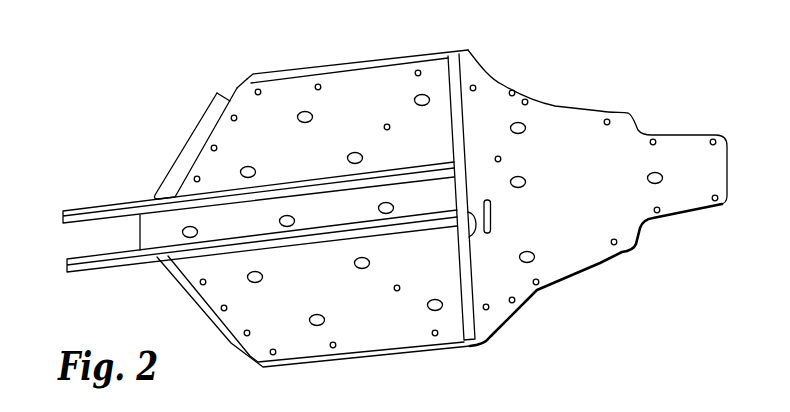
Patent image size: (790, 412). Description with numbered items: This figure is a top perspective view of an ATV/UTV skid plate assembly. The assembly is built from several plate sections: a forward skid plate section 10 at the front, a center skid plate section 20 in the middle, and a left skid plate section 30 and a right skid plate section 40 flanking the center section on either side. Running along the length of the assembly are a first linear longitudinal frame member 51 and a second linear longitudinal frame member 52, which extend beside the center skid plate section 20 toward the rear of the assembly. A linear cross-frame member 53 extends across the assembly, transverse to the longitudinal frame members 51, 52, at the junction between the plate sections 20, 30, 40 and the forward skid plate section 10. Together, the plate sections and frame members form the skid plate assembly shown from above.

The forward skid plate section 10 is at (713, 168).
The center skid plate section 20 is at (157, 232).
The left skid plate section 30 is at (377, 333).
The right skid plate section 40 is at (358, 88).
The first linear longitudinal frame member 51 is at (90, 268).
The second linear longitudinal frame member 52 is at (100, 207).
The linear cross-frame member 53 is at (475, 320).